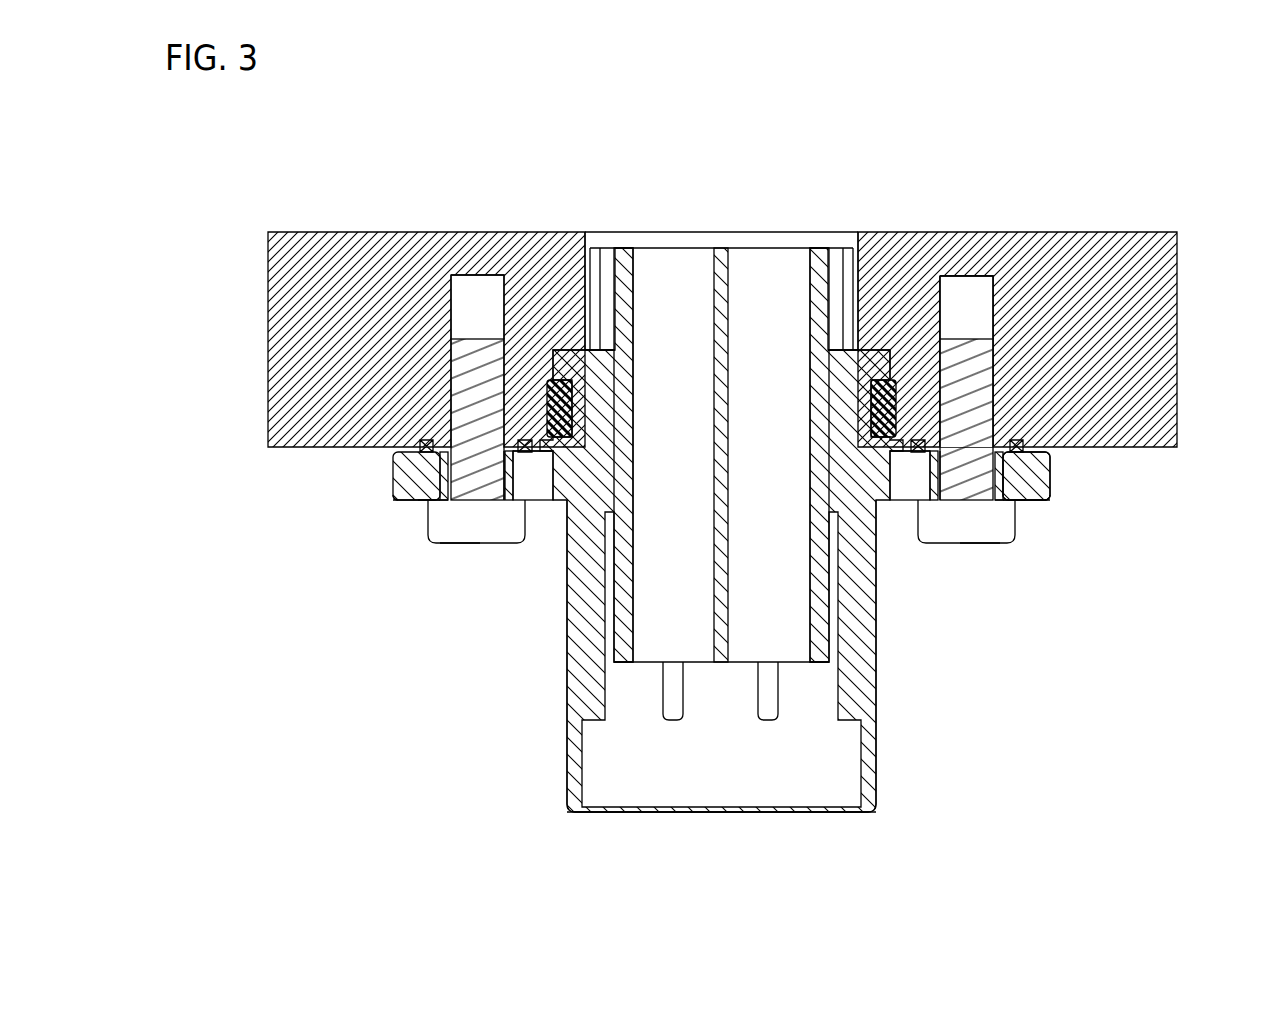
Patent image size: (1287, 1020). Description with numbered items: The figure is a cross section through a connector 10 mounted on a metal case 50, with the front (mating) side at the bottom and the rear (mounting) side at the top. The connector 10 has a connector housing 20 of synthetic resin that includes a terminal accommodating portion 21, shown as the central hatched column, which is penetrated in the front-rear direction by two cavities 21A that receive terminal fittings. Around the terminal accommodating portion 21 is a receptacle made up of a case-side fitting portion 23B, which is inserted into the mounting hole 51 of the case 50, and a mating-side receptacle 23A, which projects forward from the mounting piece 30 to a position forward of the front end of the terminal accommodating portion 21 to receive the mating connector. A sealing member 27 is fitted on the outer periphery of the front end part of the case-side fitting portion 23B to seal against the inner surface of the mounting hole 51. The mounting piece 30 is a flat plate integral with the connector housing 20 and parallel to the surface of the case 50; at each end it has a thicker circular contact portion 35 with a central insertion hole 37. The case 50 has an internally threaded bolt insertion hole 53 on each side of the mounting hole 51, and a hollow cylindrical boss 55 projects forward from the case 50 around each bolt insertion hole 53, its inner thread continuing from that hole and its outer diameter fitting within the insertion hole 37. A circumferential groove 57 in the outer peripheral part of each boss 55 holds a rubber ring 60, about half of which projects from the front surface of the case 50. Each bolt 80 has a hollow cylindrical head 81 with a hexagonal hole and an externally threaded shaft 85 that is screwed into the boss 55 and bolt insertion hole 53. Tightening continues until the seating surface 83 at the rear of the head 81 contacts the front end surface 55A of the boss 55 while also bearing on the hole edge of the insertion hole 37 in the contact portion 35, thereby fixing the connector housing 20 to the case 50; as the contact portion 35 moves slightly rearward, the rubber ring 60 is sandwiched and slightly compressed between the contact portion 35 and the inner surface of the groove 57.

The connector 10 is at (900, 805).
The connector housing 20 is at (876, 782).
The terminal accommodating portion 21 is at (830, 588).
The cavities 21A is at (634, 278).
The mating-side receptacle 23A is at (876, 648).
The case-side fitting portion 23B is at (899, 352).
The sealing member 27 is at (550, 394).
The mounting piece 30 is at (1050, 477).
The contact portions 35 is at (403, 502).
The insertion hole 37 is at (495, 489).
The case 50 is at (1147, 450).
The mounting hole 51 is at (588, 243).
The bolt insertion hole 53 is at (453, 300).
The boss 55 is at (438, 473).
The front end surfaces 55A is at (447, 500).
The groove 57 is at (544, 503).
The rubber ring 60 is at (424, 447).
The bolt 80 is at (505, 543).
The head 81 is at (462, 543).
The seating surface 83 is at (422, 497).
The shaft 85 is at (468, 338).